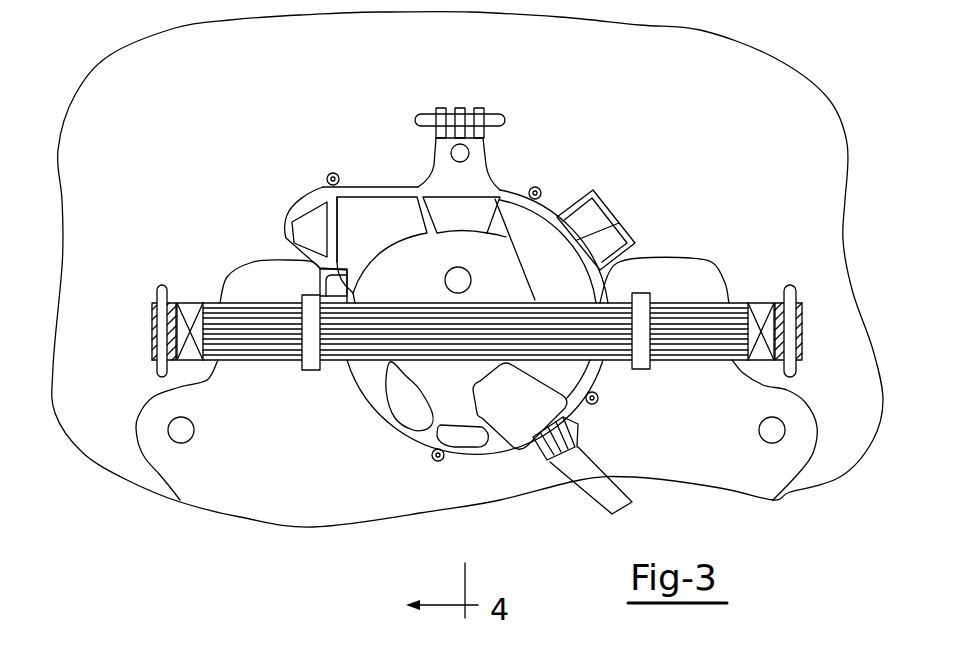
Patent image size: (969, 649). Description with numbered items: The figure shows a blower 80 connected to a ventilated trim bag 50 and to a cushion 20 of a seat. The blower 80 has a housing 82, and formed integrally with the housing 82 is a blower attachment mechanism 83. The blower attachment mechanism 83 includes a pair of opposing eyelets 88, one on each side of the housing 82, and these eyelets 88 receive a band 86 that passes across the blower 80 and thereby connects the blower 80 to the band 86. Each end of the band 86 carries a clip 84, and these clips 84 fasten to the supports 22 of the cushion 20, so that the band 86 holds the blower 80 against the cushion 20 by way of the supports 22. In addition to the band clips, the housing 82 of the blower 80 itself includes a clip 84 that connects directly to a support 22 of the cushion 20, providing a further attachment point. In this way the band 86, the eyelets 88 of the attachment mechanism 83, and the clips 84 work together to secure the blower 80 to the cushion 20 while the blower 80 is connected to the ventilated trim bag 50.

The cushion 20 is at (212, 71).
The support 22 is at (417, 122).
The ventilated trim bag 50 is at (291, 506).
The blower 80 is at (480, 284).
The housing 82 is at (423, 373).
The blower attachment mechanism 83 is at (661, 452).
The clip 84 is at (481, 153).
The band 86 is at (719, 265).
The eyelet 88 is at (309, 300).